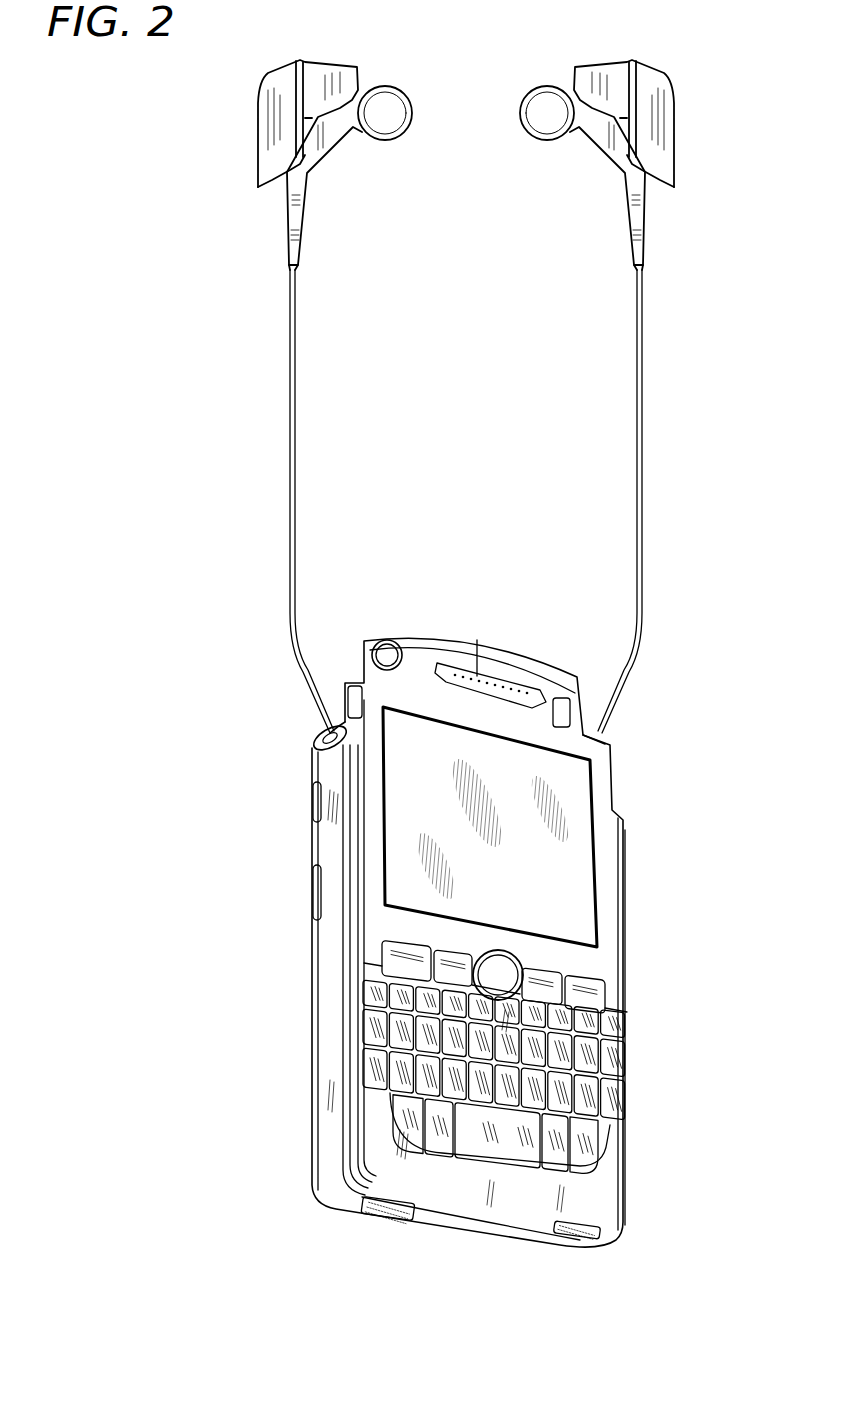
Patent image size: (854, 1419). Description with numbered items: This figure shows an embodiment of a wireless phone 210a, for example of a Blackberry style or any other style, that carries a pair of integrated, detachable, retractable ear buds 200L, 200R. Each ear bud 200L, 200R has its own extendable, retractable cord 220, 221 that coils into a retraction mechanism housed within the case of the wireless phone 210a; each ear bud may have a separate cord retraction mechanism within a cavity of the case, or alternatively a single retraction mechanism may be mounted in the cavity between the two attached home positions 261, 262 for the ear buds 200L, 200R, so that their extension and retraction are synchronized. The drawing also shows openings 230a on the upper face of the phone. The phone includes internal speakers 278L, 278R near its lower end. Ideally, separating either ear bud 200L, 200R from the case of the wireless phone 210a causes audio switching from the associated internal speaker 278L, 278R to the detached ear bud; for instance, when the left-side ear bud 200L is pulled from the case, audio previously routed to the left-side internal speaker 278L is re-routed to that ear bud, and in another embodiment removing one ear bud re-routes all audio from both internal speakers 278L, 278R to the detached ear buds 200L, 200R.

The left-side integrated, detachable ear bud 200L is at (270, 128).
The right-side integrated, detachable ear bud 200R is at (665, 124).
The extendable, retractable cord 220 is at (288, 456).
The extendable, retractable cord 221 is at (644, 456).
The earbud receptacle / opening 230a is at (388, 645).
The attached home position 261 is at (305, 712).
The attached home position 262 is at (628, 730).
The wireless phone 210a is at (627, 968).
The left-side internal speaker 278L is at (380, 1237).
The right-side internal speaker 278R is at (573, 1253).